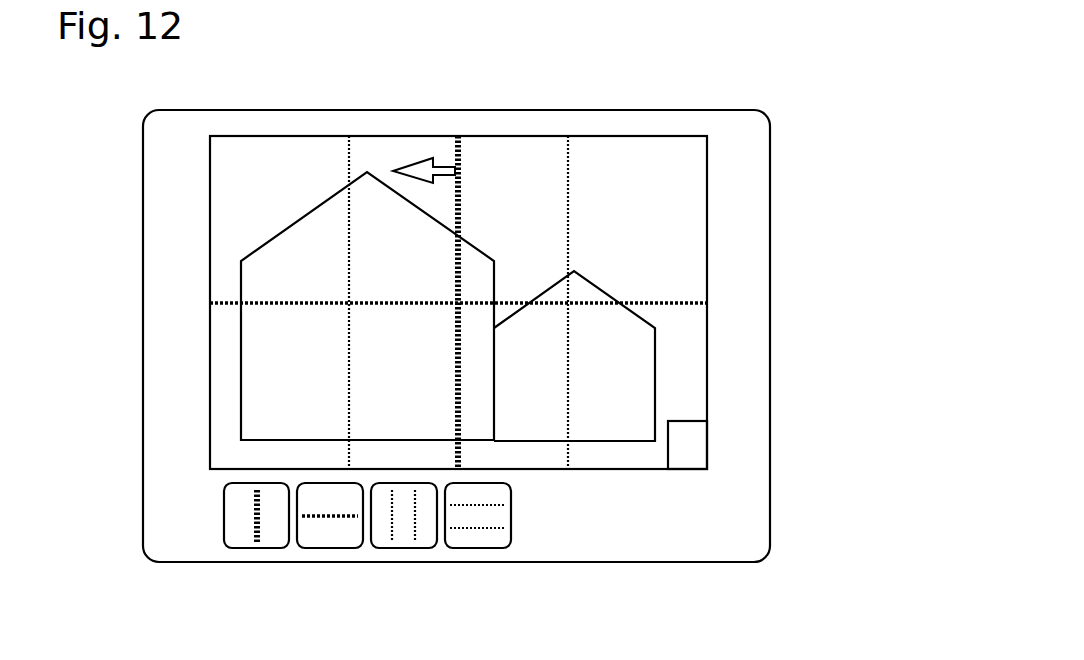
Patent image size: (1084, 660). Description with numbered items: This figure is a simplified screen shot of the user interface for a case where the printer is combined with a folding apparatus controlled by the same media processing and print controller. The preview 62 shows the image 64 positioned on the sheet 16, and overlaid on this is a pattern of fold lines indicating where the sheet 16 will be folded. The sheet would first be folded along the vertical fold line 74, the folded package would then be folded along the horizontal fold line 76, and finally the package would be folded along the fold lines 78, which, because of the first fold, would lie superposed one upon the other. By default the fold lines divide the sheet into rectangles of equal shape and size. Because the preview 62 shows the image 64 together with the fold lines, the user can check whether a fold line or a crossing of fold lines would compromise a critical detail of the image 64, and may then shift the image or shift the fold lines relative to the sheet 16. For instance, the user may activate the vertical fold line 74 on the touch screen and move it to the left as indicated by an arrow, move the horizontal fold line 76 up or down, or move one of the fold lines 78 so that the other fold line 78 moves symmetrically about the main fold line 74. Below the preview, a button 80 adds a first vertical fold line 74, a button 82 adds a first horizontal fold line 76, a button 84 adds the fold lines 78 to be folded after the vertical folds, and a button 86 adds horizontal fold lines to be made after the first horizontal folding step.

The sheet 16 is at (707, 225).
The preview 62 is at (583, 124).
The image 64 is at (311, 240).
The vertical fold line 74 is at (461, 202).
The horizontal fold line 76 is at (305, 306).
The fold lines 78 is at (569, 241).
The button 80 is at (690, 441).
The button 82 is at (333, 538).
The button 84 is at (403, 538).
The button 86 is at (475, 538).